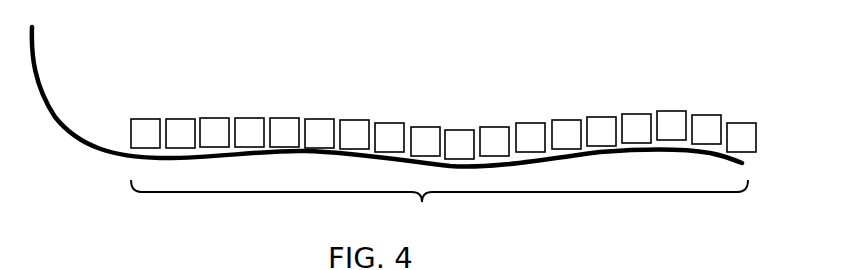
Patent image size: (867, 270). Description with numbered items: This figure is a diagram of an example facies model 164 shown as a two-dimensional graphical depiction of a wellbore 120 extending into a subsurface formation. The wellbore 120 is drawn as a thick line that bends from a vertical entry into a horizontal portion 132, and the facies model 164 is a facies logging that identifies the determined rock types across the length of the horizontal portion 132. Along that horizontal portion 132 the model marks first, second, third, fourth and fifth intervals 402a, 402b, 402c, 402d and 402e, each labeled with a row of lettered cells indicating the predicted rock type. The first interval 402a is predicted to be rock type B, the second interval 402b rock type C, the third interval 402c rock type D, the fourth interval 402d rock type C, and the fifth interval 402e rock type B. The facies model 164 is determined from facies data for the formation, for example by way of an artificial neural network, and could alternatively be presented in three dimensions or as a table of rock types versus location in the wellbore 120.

The wellbore 120 is at (41, 69).
The facies model 164 is at (739, 23).
The first interval 402a is at (298, 99).
The second interval 402b is at (369, 99).
The third interval 402c is at (480, 99).
The fourth interval 402d is at (578, 99).
The fifth interval 402e is at (763, 99).
The horizontal portion 132 is at (439, 209).